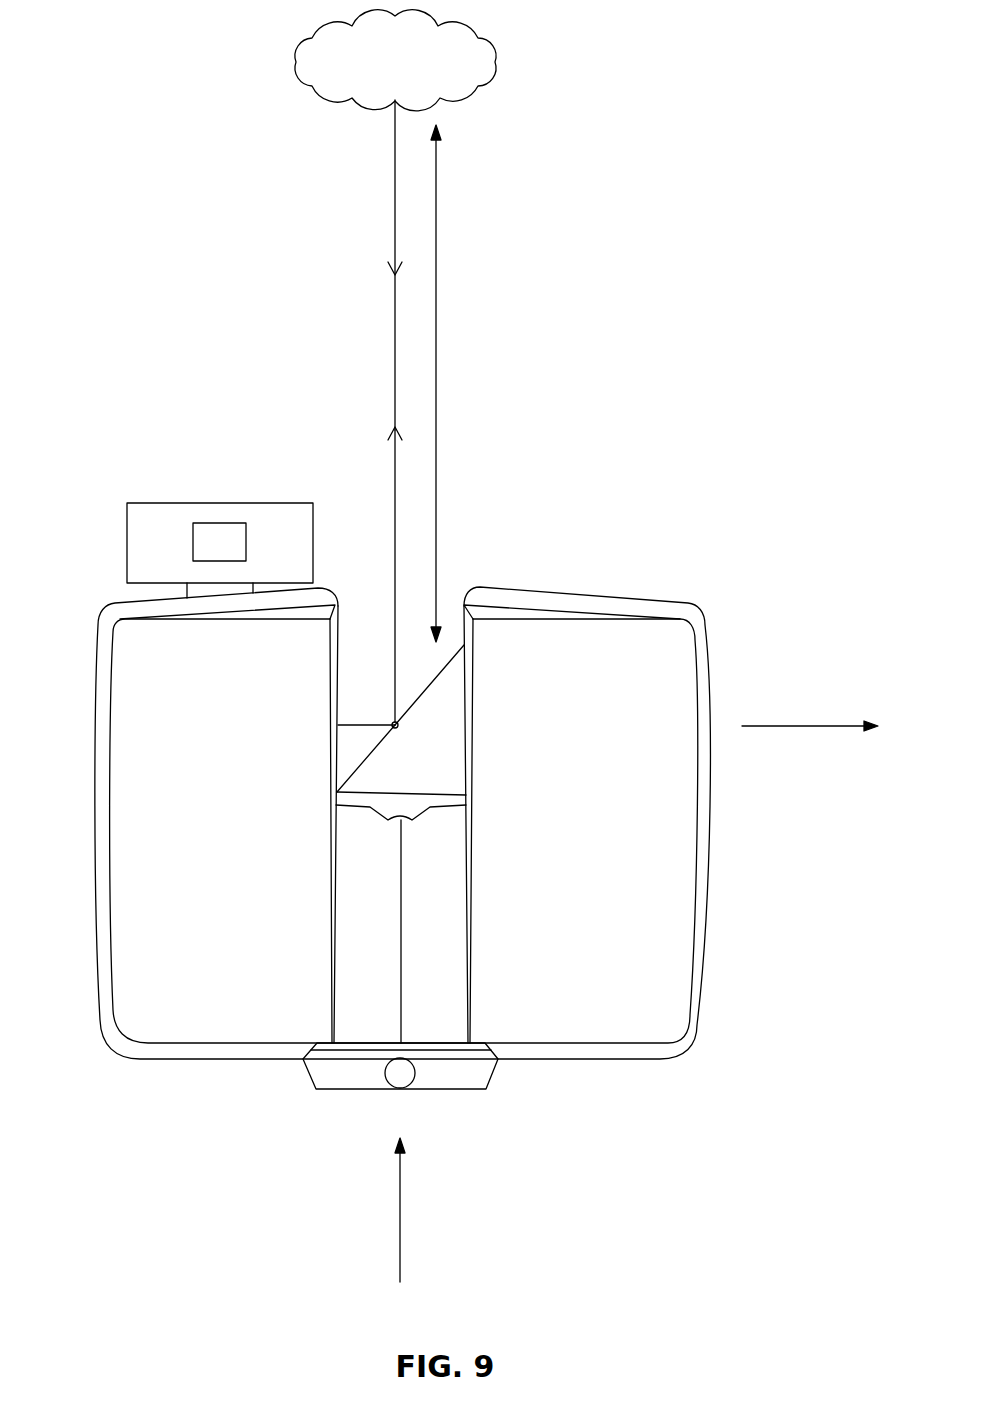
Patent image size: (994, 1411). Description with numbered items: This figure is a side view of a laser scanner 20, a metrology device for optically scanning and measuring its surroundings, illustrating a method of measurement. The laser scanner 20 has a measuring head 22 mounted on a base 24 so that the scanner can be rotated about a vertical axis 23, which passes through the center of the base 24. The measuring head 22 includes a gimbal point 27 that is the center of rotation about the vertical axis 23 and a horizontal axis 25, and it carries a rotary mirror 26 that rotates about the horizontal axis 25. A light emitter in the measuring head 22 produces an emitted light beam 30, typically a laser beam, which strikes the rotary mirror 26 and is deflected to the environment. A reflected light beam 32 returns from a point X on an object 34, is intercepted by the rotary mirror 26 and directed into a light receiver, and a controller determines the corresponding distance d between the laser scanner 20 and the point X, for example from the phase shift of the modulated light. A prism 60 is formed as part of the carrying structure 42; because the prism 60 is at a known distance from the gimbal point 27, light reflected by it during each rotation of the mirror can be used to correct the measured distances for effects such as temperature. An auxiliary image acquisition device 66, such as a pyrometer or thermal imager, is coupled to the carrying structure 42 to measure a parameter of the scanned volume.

The laser scanner 20 is at (157, 159).
The measuring head 22 is at (694, 526).
The vertical axis 23 is at (400, 1240).
The base 24 is at (305, 1073).
The horizontal axis 25 is at (808, 726).
The rotary mirror 26 is at (368, 758).
The gimbal point 27 is at (399, 728).
The emitted light beam 30 is at (395, 477).
The reflected light beam 32 is at (395, 215).
The object 34 is at (479, 37).
The carrying structure 42 is at (411, 1104).
The prism 60 is at (410, 822).
The auxiliary image acquisition device 66 is at (147, 432).
The distance d is at (436, 385).